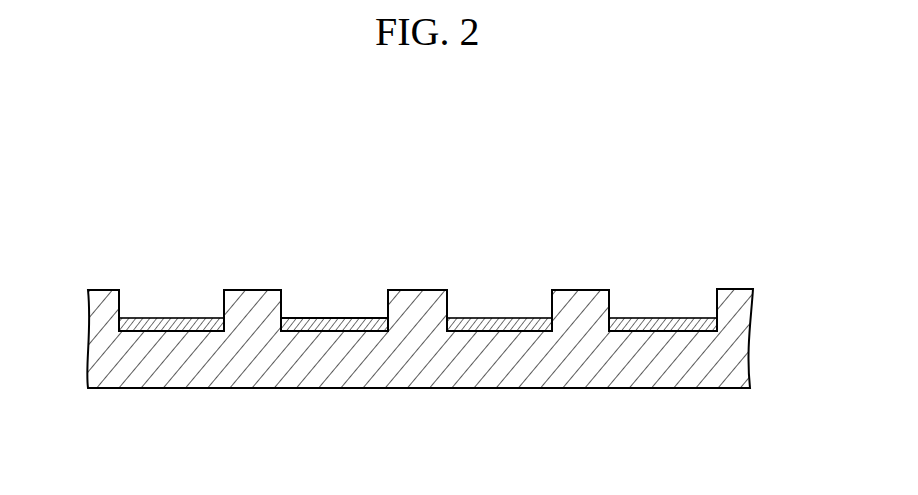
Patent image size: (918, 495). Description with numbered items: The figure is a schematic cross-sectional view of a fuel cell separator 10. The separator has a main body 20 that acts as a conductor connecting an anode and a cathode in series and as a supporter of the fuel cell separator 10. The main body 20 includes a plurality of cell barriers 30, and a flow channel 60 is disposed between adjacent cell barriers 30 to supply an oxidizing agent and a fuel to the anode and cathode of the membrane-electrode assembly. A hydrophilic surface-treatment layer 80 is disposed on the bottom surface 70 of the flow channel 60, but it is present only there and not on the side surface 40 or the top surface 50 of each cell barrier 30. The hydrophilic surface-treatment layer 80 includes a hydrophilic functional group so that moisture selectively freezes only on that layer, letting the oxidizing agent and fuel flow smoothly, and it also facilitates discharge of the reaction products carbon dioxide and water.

The fuel cell separator 10 is at (163, 196).
The main body 20 is at (737, 356).
The cell barrier 30 is at (251, 306).
The side surface 40 is at (284, 301).
The top surface 50 is at (267, 290).
The flow channel 60 is at (351, 293).
The bottom surface 70 is at (497, 317).
The hydrophilic surface-treatment layer 80 is at (662, 317).